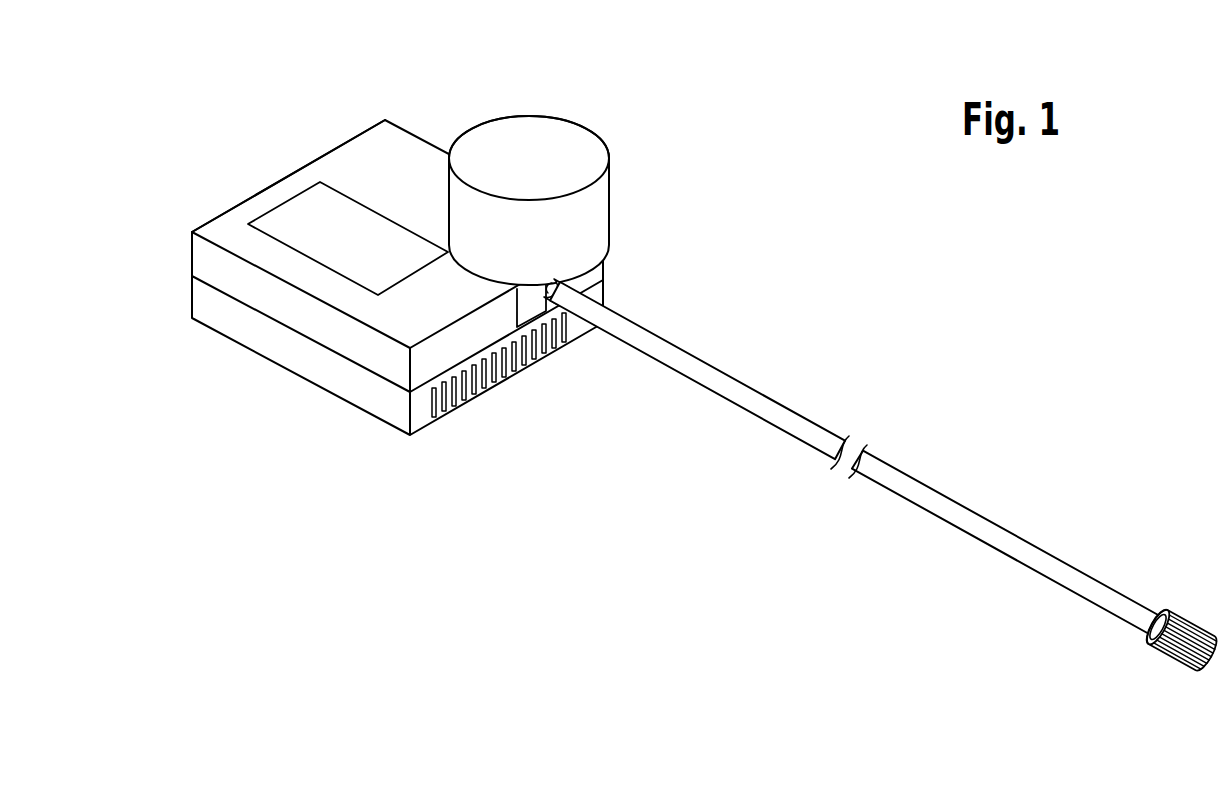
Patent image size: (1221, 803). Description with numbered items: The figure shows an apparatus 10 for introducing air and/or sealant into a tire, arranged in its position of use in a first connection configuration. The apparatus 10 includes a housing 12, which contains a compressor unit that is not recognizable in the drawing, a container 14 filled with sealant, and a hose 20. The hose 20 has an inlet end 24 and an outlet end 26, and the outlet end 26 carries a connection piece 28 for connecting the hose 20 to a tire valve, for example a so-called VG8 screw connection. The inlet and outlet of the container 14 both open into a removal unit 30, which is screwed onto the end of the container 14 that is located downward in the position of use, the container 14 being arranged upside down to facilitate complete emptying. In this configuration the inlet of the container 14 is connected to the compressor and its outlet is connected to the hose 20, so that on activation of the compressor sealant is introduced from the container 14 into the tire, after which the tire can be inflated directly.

The apparatus 10 is at (290, 142).
The housing 12 is at (340, 380).
The container 14 is at (563, 135).
The hose 20 is at (765, 407).
The inlet end 24 is at (620, 280).
The outlet end 26 is at (1157, 605).
The connection piece 28 is at (1180, 663).
The removal unit 30 is at (540, 302).